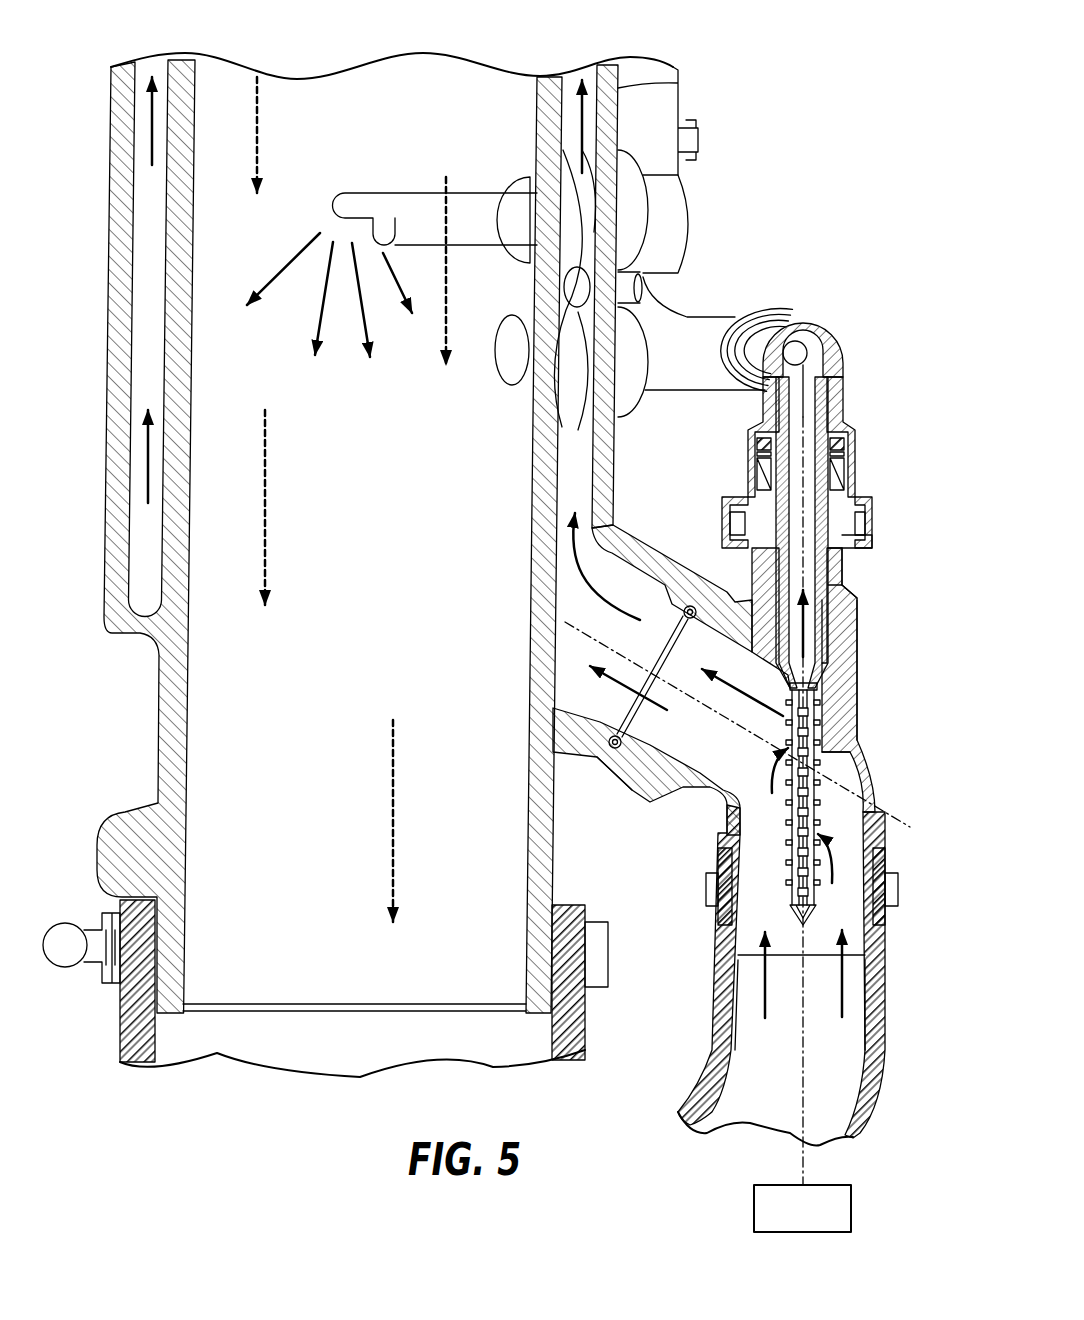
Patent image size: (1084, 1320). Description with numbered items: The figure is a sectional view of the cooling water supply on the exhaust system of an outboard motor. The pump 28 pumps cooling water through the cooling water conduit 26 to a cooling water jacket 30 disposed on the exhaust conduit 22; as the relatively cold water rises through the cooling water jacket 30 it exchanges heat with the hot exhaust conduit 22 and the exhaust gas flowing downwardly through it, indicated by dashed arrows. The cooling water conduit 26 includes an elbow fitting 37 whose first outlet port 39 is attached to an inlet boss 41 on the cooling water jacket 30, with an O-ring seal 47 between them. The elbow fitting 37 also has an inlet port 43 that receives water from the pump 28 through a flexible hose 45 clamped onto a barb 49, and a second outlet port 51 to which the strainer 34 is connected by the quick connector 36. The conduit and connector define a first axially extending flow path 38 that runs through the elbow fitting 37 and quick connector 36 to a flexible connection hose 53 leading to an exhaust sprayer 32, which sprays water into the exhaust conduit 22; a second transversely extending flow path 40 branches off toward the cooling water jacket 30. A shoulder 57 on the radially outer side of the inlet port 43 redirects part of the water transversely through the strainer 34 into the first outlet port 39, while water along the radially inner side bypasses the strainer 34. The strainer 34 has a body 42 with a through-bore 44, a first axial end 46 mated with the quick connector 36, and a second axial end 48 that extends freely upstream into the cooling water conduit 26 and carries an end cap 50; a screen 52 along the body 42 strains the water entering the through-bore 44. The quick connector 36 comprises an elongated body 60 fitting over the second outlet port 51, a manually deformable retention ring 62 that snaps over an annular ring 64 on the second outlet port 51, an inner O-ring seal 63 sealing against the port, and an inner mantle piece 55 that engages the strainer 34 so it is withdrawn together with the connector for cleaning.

The exhaust conduit 22 is at (188, 66).
The cooling water conduit 26 is at (697, 857).
The pump 28 is at (852, 1210).
The cooling water jacket 30 is at (621, 92).
The exhaust sprayer 32 is at (683, 212).
The strainer 34 is at (843, 407).
The quick connector 36 is at (876, 487).
The elbow fitting 37 is at (849, 697).
The first axially extending flow path 38 is at (858, 435).
The first outlet port 39 is at (596, 721).
The second transversely extending flow path 40 is at (548, 653).
The inlet boss 41 is at (612, 766).
The body 42 is at (830, 640).
The inlet port 43 is at (886, 831).
The through-bore 44 is at (810, 622).
The flexible hose 45 is at (888, 1007).
The first axial end 46 is at (843, 377).
The O-ring seal 47 is at (612, 744).
The second axial end 48 is at (773, 913).
The barb 49 is at (884, 923).
The end cap 50 is at (810, 920).
The second outlet port 51 is at (836, 558).
The screen 52 is at (819, 813).
The flexible connection hose 53 is at (697, 327).
The inner mantle piece 55 is at (856, 466).
The shoulder 57 is at (846, 745).
The elongated body 60 is at (756, 432).
The retention ring 62 is at (874, 524).
The inner O-ring seal 63 is at (758, 455).
The annular ring 64 is at (872, 505).